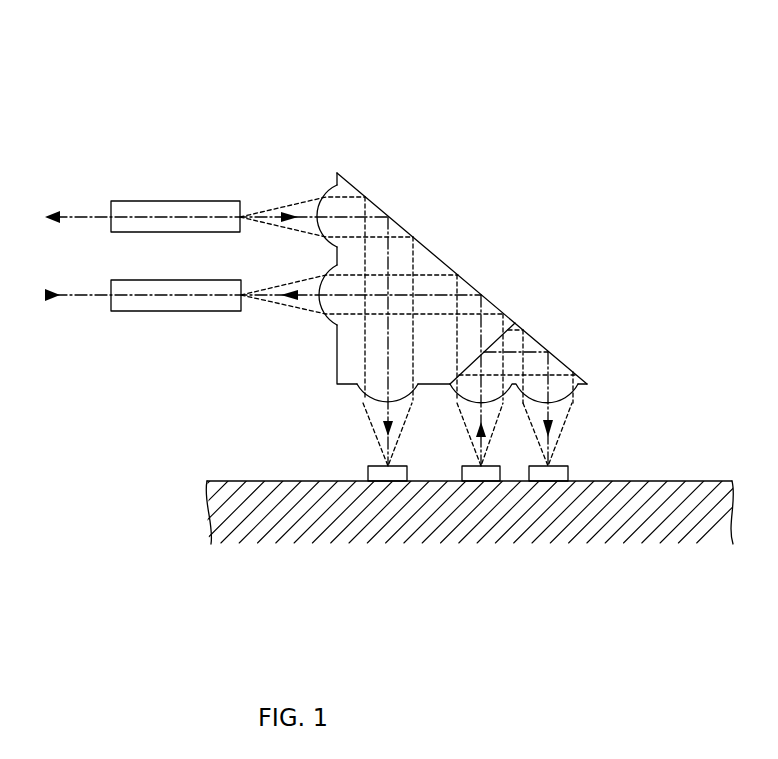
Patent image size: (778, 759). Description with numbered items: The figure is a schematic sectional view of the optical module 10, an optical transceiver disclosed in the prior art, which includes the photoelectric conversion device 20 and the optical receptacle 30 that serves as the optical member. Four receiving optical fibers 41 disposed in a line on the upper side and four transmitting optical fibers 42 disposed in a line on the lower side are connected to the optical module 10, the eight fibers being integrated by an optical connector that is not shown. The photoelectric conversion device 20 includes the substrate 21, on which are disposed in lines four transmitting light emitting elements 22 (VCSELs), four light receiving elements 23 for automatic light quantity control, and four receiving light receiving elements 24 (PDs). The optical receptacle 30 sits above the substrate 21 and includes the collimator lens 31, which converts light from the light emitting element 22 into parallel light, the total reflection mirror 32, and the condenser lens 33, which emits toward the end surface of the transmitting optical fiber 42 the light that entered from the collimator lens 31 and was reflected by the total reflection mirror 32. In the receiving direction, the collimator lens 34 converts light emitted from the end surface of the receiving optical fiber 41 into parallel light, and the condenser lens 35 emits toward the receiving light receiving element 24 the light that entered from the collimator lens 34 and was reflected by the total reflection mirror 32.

The optical module 10 is at (630, 100).
The photoelectric conversion device 20 is at (426, 482).
The substrate 21 is at (665, 427).
The transmitting light emitting element 22 is at (480, 477).
The light receiving element for automatic light quantity control 23 is at (547, 477).
The receiving light receiving element 24 is at (385, 477).
The optical receptacle 30 is at (430, 301).
The collimator lens 31 is at (471, 407).
The total reflection mirror 32 is at (443, 257).
The condenser lens 33 is at (316, 282).
The collimator lens 34 is at (316, 201).
The condenser lens 35 is at (375, 405).
The receiving optical fiber 41 is at (158, 215).
The transmitting optical fiber 42 is at (163, 300).